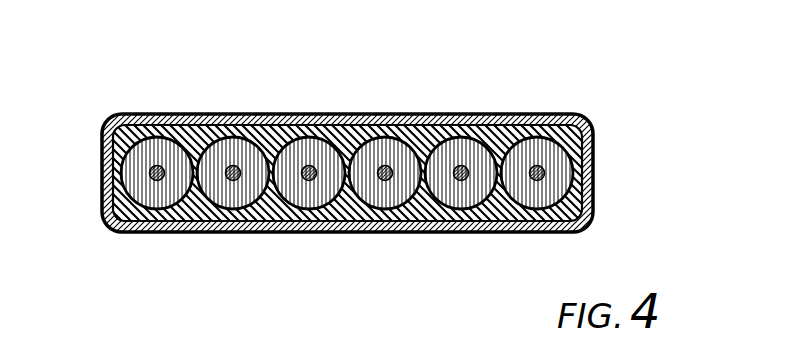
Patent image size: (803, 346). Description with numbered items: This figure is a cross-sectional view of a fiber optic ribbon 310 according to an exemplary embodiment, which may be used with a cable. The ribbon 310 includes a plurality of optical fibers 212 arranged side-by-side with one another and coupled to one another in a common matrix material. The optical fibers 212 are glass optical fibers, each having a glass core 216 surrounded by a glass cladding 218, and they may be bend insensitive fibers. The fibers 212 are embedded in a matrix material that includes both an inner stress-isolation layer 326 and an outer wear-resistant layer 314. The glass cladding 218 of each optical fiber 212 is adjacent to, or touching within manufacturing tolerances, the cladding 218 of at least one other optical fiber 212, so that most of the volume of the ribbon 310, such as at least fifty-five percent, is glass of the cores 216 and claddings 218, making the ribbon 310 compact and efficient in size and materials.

The ribbon 310 is at (630, 100).
The wear-resistant layer 314 is at (180, 115).
The stress-isolation layer 326 is at (103, 202).
The optical fibers 212 is at (303, 197).
The glass cladding 218 is at (450, 155).
The glass core 216 is at (460, 180).